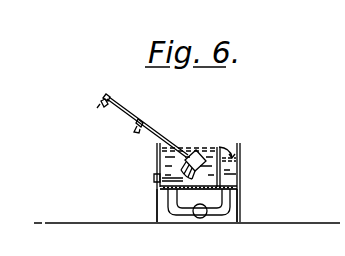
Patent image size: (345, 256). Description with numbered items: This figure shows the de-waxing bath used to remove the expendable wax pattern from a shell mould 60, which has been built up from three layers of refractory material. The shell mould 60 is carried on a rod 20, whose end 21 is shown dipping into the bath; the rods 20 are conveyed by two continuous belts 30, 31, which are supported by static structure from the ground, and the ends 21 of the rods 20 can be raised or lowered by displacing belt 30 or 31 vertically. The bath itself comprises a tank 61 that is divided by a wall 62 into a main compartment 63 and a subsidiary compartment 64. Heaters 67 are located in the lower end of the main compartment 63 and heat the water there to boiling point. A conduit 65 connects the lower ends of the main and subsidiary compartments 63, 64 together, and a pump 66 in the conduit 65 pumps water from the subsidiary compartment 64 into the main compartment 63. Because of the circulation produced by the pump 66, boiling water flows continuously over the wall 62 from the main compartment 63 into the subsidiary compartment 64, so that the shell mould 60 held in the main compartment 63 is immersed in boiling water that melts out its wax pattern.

The rod 20 is at (137, 117).
The end 21 is at (162, 141).
The continuous belt 30 is at (101, 107).
The continuous belt 31 is at (137, 134).
The shell mould 60 is at (198, 156).
The tank 61 is at (240, 180).
The wall 62 is at (222, 172).
The main compartment 63 is at (162, 160).
The subsidiary compartment 64 is at (238, 190).
The conduit 65 is at (218, 213).
The pump 66 is at (195, 215).
The heaters 67 is at (163, 188).